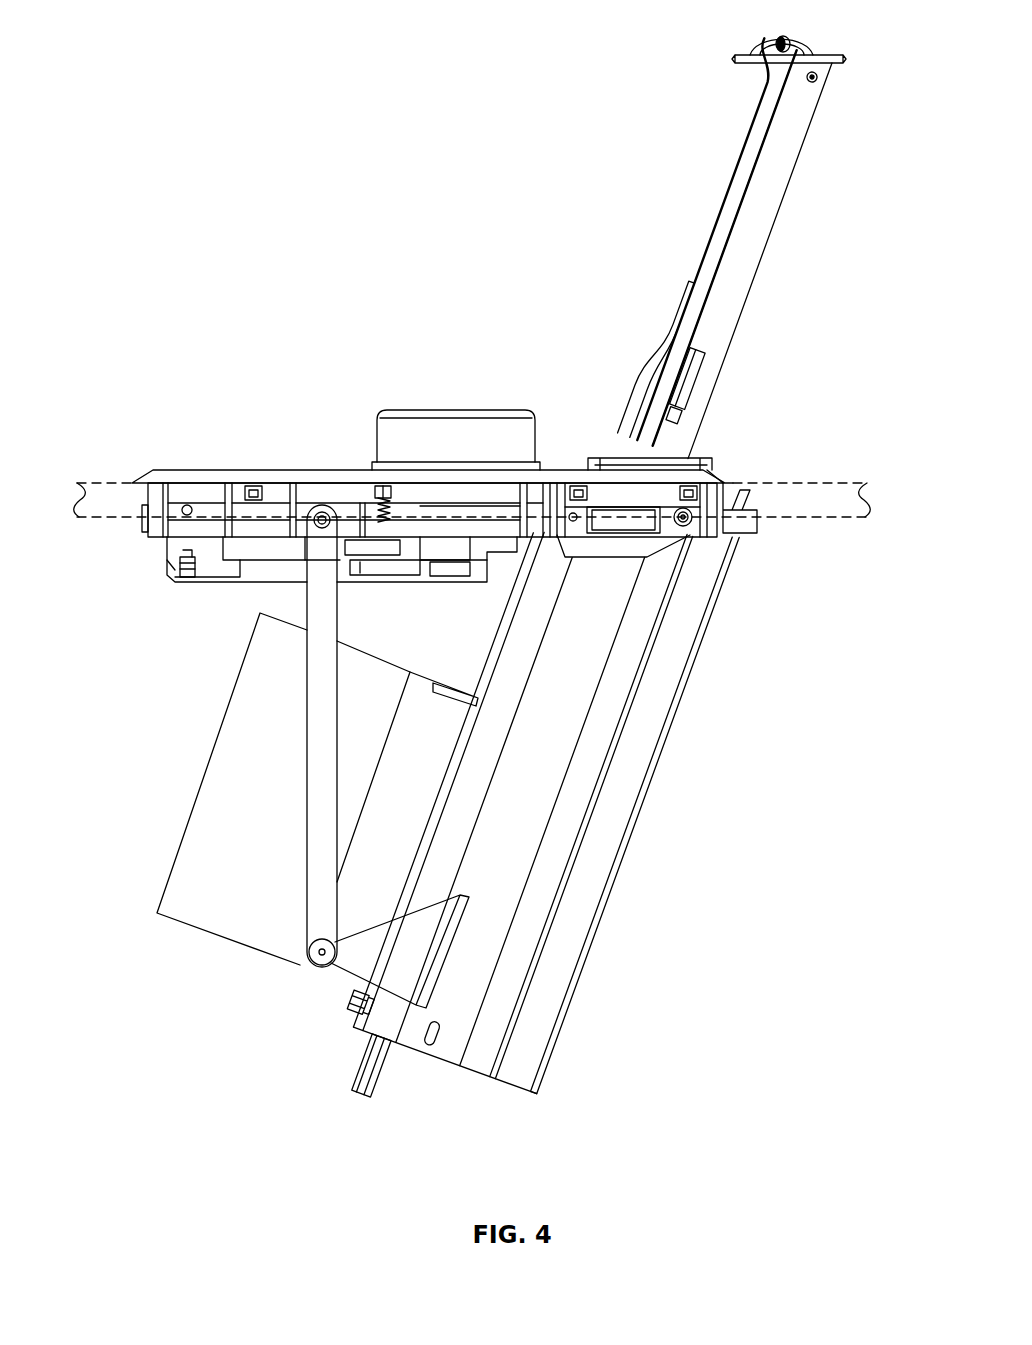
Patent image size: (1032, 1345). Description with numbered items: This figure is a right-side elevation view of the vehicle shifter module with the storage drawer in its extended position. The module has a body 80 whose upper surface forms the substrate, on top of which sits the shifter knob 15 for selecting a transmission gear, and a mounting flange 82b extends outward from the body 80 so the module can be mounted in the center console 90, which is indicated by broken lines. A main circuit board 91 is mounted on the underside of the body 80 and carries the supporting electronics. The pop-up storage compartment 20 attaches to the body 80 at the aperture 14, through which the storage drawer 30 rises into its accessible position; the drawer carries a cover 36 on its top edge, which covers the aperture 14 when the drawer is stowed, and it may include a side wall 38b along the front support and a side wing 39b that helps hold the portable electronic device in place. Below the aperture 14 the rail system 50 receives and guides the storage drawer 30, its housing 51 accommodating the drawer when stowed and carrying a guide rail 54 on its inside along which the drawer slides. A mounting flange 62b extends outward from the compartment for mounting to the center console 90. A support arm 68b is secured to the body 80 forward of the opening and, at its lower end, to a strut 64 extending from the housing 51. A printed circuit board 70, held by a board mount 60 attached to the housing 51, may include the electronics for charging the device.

The pop-up storage compartment 20 is at (540, 128).
The center console 90 is at (111, 482).
The body 80 is at (184, 469).
The main circuit board 91 is at (170, 577).
The mounting flange 82b is at (360, 520).
The shifter knob 15 is at (455, 408).
The aperture 14 is at (703, 458).
The cover 36 is at (810, 47).
The storage drawer 30 is at (813, 114).
The side wall 38b is at (733, 190).
The side wing 39b is at (650, 360).
The mounting flange 62b is at (640, 528).
The rail system 50 is at (703, 688).
The housing 51 is at (600, 835).
The guide rail 54 is at (355, 1062).
The support arm 68b is at (317, 600).
The printed circuit board 70 is at (238, 820).
The board mount 60 is at (370, 862).
The strut 64 is at (365, 960).